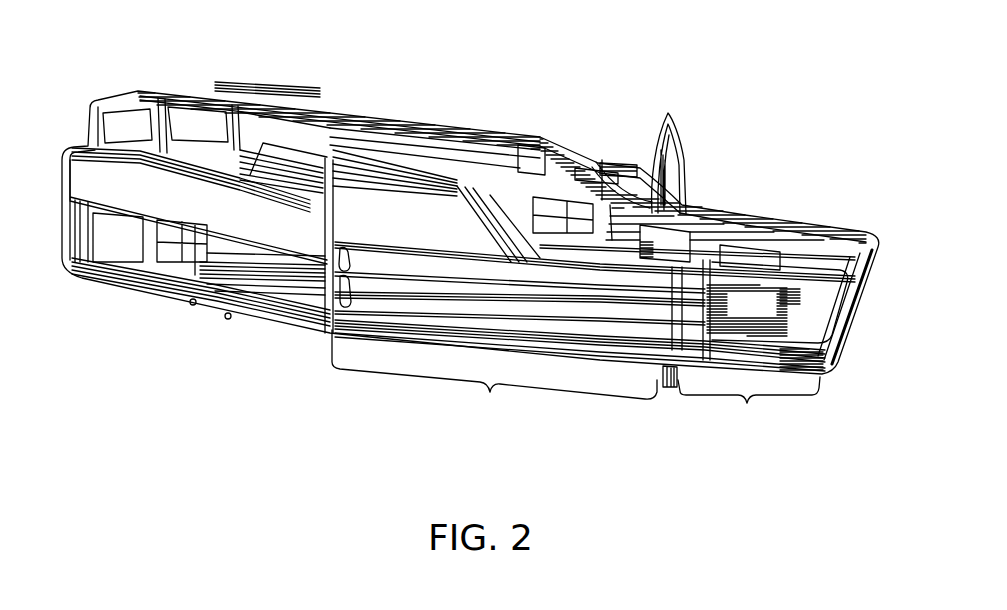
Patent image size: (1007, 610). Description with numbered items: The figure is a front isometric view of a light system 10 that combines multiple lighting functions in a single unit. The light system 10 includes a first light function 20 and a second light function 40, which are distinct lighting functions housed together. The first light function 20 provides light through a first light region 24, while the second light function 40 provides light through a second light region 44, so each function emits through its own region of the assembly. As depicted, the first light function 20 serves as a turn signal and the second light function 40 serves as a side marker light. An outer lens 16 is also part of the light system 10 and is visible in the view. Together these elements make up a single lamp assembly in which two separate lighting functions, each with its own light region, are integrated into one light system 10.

The light system 10 is at (603, 106).
The outer lens 16 is at (318, 213).
The first light function 20 is at (437, 412).
The first light region 24 is at (490, 392).
The second light function 40 is at (837, 453).
The second light region 44 is at (747, 403).